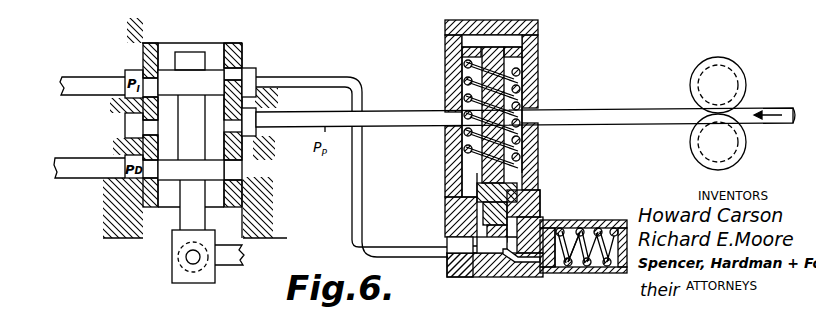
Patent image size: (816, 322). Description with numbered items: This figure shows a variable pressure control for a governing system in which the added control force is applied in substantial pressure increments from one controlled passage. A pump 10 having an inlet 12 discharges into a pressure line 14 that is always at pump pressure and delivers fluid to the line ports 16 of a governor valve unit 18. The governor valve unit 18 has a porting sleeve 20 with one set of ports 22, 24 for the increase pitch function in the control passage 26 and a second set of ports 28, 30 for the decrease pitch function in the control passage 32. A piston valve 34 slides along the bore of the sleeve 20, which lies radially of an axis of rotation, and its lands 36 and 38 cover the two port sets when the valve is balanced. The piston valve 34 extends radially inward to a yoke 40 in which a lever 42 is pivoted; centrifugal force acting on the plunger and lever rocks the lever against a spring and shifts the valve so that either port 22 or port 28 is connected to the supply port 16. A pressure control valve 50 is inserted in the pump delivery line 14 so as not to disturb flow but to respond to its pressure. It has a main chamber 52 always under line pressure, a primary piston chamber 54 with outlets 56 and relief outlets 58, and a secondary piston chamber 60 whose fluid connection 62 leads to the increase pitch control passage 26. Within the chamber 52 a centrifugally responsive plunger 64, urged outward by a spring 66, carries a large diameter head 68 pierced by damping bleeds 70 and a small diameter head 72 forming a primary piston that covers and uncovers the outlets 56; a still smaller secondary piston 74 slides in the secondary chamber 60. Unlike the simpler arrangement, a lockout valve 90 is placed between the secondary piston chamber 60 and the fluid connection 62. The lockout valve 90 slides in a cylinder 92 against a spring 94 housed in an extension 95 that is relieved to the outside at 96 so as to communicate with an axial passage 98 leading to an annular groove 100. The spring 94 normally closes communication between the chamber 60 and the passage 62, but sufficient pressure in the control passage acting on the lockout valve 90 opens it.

The pump 10 is at (735, 151).
The inlet 12 is at (783, 106).
The pressure line 14 is at (395, 118).
The line ports 16 is at (152, 126).
The governor valve unit 18 is at (302, 66).
The porting sleeve 20 is at (140, 204).
The increase pitch port 22 is at (150, 83).
The increase pitch port 24 is at (238, 78).
The increase pitch control passage 26 is at (74, 80).
The decrease pitch port 28 is at (128, 159).
The decrease pitch port 30 is at (234, 172).
The decrease pitch control passage 32 is at (70, 178).
The piston valve 34 is at (199, 53).
The land 36 is at (173, 72).
The land 38 is at (212, 178).
The yoke 40 is at (173, 277).
The lever 42 is at (234, 264).
The pressure control valve 50 is at (446, 30).
The main chamber 52 is at (467, 78).
The primary piston chamber 54 is at (512, 210).
The outlets 56 is at (535, 190).
The outlets 58 is at (541, 222).
The secondary piston chamber 60 is at (488, 238).
The fluid connection 62 is at (346, 77).
The centrifugally responsive plunger 64 is at (492, 78).
The spring 66 is at (522, 100).
The large diameter head 68 is at (522, 58).
The damping bleeds 70 is at (479, 47).
The small diameter head 72 is at (478, 186).
The secondary piston 74 is at (485, 215).
The lockout valve 90 is at (472, 266).
The cylinder 92 is at (455, 262).
The spring 94 is at (603, 271).
The extension 95 is at (589, 268).
The relief 96 is at (613, 231).
The axial passage 98 is at (551, 258).
The annular groove 100 is at (497, 266).